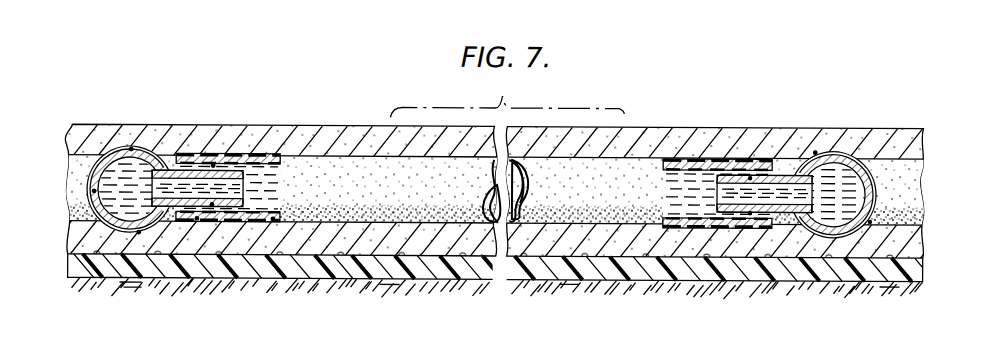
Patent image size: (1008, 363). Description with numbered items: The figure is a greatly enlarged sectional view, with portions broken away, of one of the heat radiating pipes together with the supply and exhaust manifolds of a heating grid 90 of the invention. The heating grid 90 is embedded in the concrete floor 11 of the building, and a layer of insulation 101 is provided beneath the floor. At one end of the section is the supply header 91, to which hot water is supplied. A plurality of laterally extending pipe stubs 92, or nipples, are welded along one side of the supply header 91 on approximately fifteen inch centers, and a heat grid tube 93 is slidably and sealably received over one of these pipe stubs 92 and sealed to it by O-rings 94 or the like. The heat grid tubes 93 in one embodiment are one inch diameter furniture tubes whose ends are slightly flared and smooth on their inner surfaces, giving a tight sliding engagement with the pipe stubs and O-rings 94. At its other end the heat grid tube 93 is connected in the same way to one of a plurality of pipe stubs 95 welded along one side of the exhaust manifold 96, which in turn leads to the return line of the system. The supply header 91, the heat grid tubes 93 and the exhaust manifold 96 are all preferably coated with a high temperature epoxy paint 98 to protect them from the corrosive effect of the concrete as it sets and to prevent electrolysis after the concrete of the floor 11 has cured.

The concrete floor 11 is at (97, 126).
The heating grid 90 is at (602, 148).
The supply header 91 is at (131, 150).
The pipe stubs 92 is at (192, 158).
The heat grid tubes 93 is at (279, 222).
The O-rings 94 is at (222, 161).
The pipe stubs 95 is at (778, 175).
The exhaust manifold 96 is at (845, 158).
The high temperature epoxy paint 98 is at (152, 150).
The layer of insulation 101 is at (105, 279).